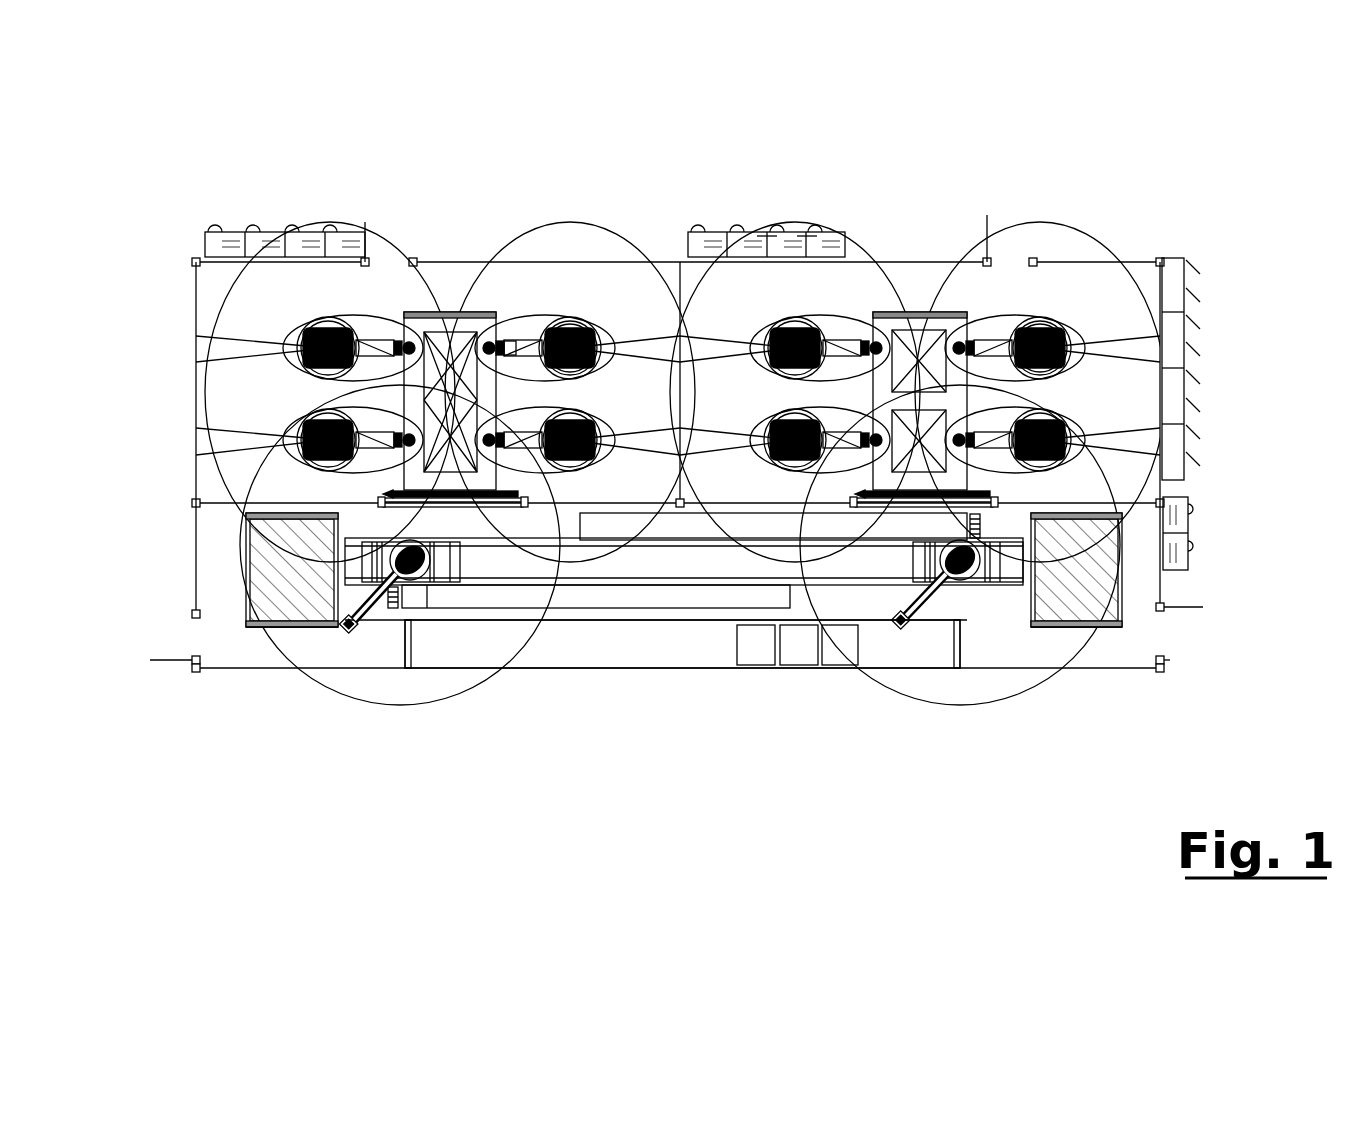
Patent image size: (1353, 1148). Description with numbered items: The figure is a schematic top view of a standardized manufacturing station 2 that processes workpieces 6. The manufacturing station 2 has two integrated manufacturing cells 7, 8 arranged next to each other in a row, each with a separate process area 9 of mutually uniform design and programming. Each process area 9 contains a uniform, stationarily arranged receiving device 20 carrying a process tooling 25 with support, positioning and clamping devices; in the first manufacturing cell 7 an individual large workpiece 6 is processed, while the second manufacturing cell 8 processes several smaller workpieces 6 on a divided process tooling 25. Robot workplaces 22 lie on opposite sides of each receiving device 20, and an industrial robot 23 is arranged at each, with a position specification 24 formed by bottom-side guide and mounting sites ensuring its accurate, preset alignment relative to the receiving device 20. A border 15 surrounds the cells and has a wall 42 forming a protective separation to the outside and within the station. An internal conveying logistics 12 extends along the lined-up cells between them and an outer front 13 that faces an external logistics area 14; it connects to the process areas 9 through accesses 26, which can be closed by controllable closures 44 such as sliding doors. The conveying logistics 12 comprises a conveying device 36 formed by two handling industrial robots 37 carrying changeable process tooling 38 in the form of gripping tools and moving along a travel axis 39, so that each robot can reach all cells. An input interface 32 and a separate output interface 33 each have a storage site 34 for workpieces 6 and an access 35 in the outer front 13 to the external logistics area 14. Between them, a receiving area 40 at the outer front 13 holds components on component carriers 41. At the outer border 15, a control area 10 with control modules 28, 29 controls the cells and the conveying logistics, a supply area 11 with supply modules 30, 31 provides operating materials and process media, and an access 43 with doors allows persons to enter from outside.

The manufacturing station 2 is at (1220, 238).
The workpiece 6 is at (452, 338).
The manufacturing cell 7 is at (528, 282).
The manufacturing cell 8 is at (1118, 282).
The process area 9 is at (568, 286).
The control area 10 is at (1233, 369).
The supply area 11 is at (272, 224).
The internal conveying logistics 12 is at (221, 632).
The outer front 13 is at (632, 672).
The external logistics area 14 is at (1165, 708).
The border 15 is at (619, 440).
The receiving device 20 is at (436, 316).
The robot workplace 22 is at (617, 365).
The industrial robot 23 is at (594, 354).
The position specification 24 is at (308, 340).
The process tooling 25 is at (508, 356).
The access 26 is at (855, 494).
The control module 28 is at (1183, 462).
The control module 29 is at (1183, 393).
The supply module 30 is at (765, 240).
The supply module 31 is at (808, 240).
The input interface 32 is at (221, 632).
The output interface 33 is at (1016, 634).
The storage site 34 is at (272, 560).
The access 35 is at (272, 662).
The conveying device 36 is at (435, 596).
The industrial robot 37 is at (660, 632).
The process tooling 38 is at (352, 634).
The travel axis 39 is at (582, 570).
The receiving area 40 is at (672, 645).
The component carrier 41 is at (790, 648).
The wall 42 is at (607, 503).
The access 43 is at (1200, 628).
The closure 44 is at (383, 494).